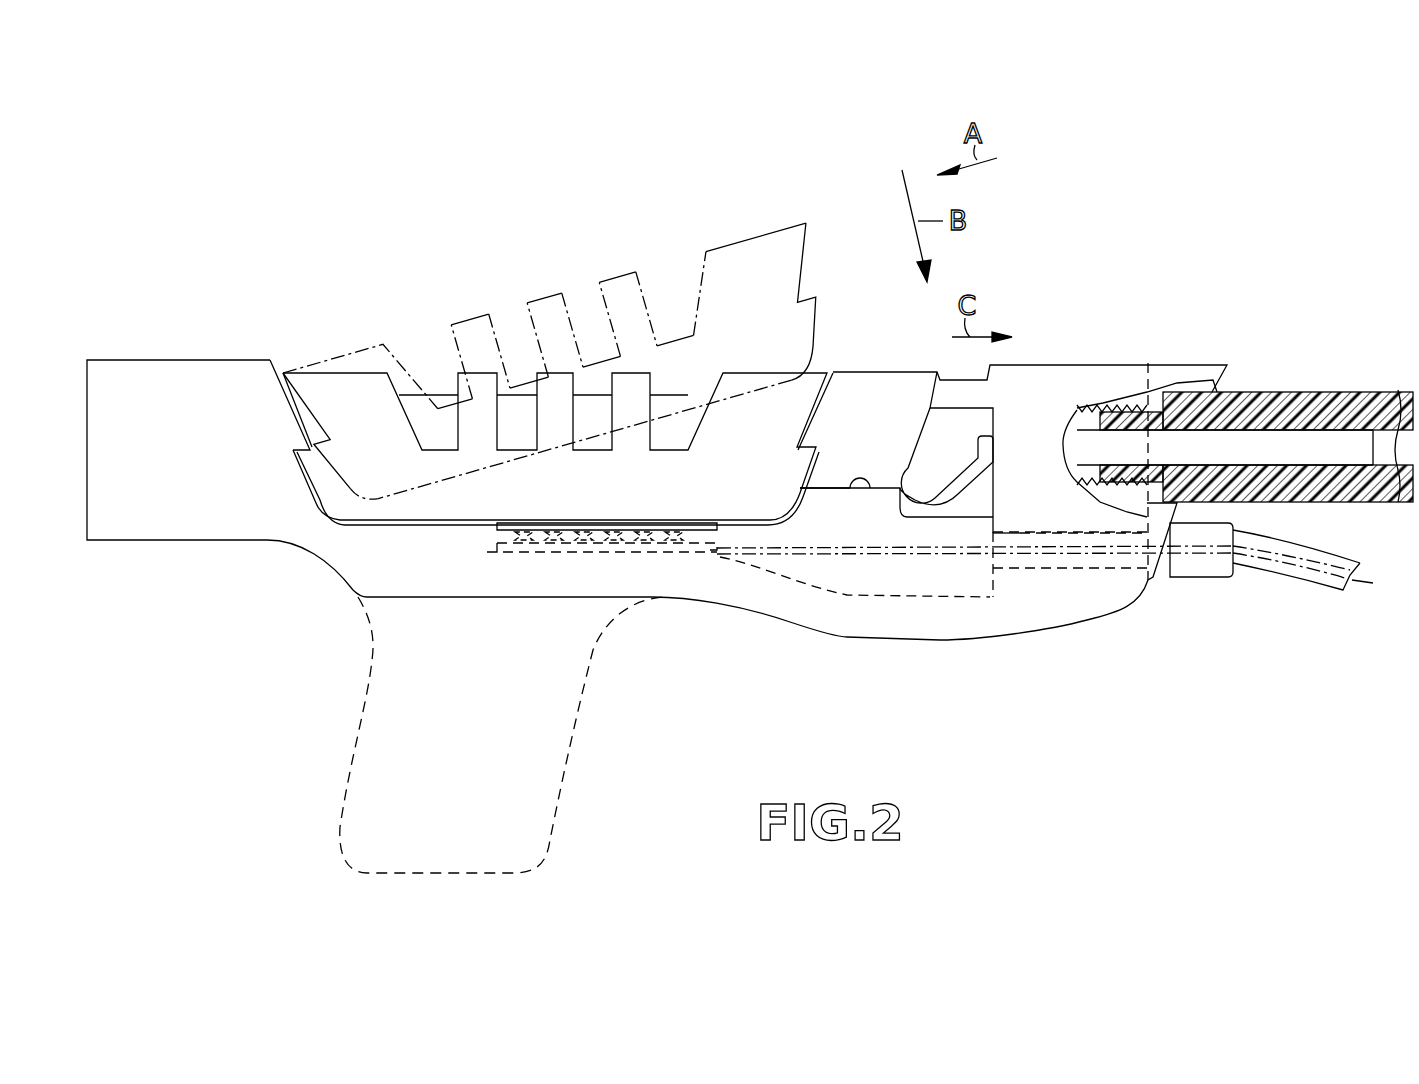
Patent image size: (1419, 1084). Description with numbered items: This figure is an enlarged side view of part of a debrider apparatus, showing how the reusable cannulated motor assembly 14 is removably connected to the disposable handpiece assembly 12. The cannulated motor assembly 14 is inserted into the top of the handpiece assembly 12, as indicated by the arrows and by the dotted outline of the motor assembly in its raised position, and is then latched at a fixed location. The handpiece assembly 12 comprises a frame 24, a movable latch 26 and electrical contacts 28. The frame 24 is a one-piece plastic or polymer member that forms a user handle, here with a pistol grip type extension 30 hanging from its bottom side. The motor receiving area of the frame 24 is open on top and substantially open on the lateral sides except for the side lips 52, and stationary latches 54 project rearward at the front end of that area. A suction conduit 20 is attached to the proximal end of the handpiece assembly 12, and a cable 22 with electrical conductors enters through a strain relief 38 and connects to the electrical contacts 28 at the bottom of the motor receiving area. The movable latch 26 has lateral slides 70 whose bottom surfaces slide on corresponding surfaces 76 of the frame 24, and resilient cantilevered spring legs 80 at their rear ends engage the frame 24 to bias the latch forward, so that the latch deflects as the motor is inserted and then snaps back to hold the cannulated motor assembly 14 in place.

The handpiece assembly 12 is at (250, 360).
The cannulated motor assembly 14 is at (511, 322).
The suction conduit 20 is at (1297, 392).
The cable 22 is at (1310, 577).
The frame 24 is at (182, 541).
The movable latch 26 is at (980, 500).
The electrical contacts 28 is at (645, 555).
The pistol grip type extension 30 is at (373, 752).
The strain relief 38 is at (1208, 577).
The side lips 52 is at (395, 527).
The stationary latches 54 is at (297, 448).
The lateral slides 70 is at (870, 483).
The surfaces 76 is at (822, 490).
The spring legs 80 is at (957, 500).